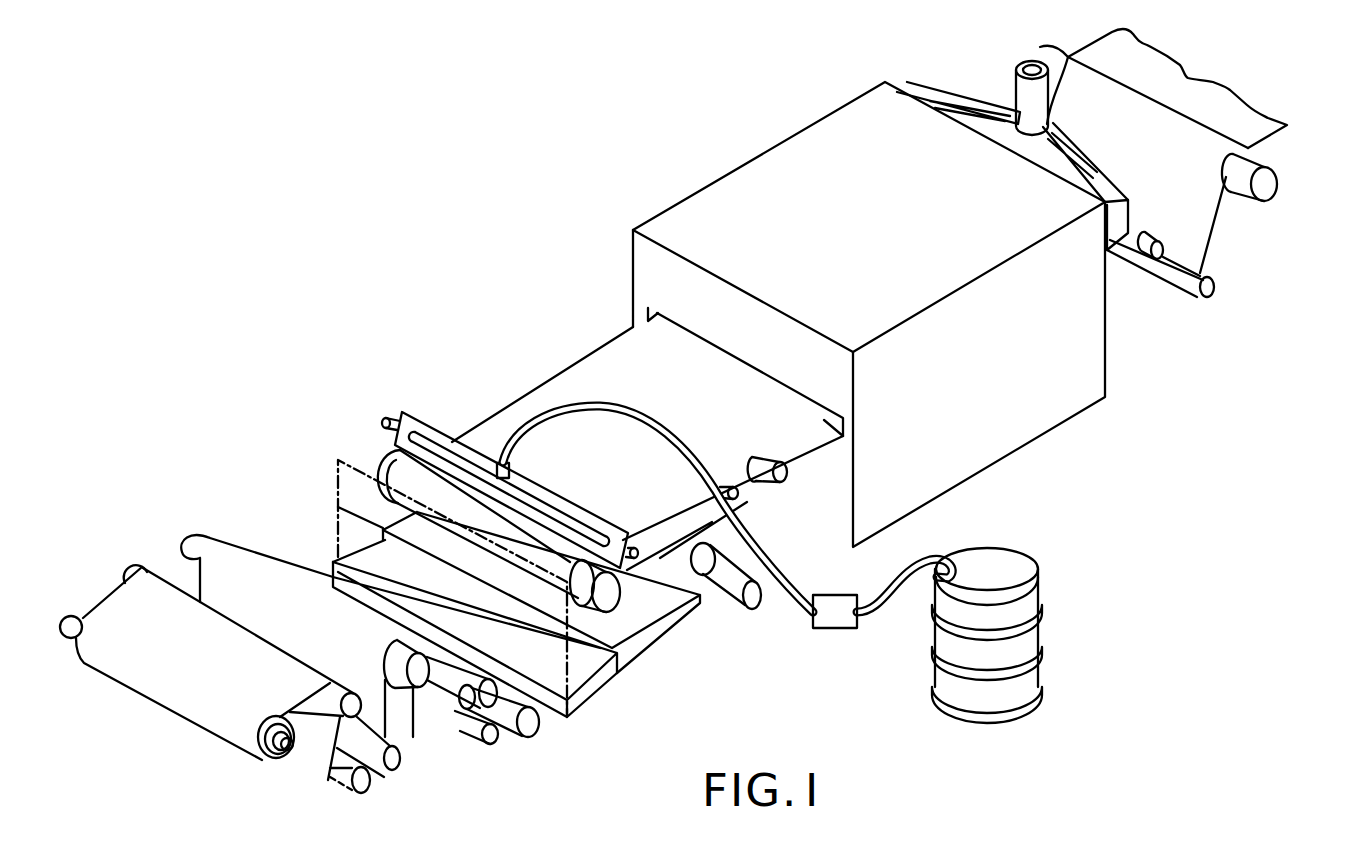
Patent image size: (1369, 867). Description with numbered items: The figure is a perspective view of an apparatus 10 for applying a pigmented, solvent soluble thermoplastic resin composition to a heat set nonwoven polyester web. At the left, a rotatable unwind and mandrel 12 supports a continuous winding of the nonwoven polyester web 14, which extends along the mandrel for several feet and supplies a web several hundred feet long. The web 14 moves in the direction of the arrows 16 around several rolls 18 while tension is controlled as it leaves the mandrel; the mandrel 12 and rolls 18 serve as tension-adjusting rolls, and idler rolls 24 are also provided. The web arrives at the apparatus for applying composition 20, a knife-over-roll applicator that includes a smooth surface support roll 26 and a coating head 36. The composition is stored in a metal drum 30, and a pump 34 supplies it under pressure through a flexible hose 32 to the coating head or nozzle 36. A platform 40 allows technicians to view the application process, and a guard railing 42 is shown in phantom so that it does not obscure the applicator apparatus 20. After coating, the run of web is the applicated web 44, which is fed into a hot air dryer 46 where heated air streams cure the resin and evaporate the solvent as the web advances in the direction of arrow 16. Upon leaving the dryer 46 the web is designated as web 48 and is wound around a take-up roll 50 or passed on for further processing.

The apparatus 10 is at (497, 209).
The rotatable unwind and mandrel 12 is at (70, 613).
The nonwoven polyester web 14 is at (273, 764).
The arrows 16 is at (1199, 184).
The rolls 18 is at (417, 716).
The apparatus for applying composition 20 is at (388, 400).
The idler rolls 24 is at (745, 546).
The smooth surface support roll 26 is at (378, 458).
The metal drum 30 is at (1038, 560).
The flexible hose 32 is at (795, 598).
The pump 34 is at (842, 628).
The coating head 36 is at (425, 438).
The platform 40 is at (594, 668).
The guard railing 42 is at (338, 460).
The applicated web 44 is at (603, 350).
The hot air dryer 46 is at (756, 152).
The web 48 is at (1255, 149).
The take-up roll 50 is at (1278, 182).